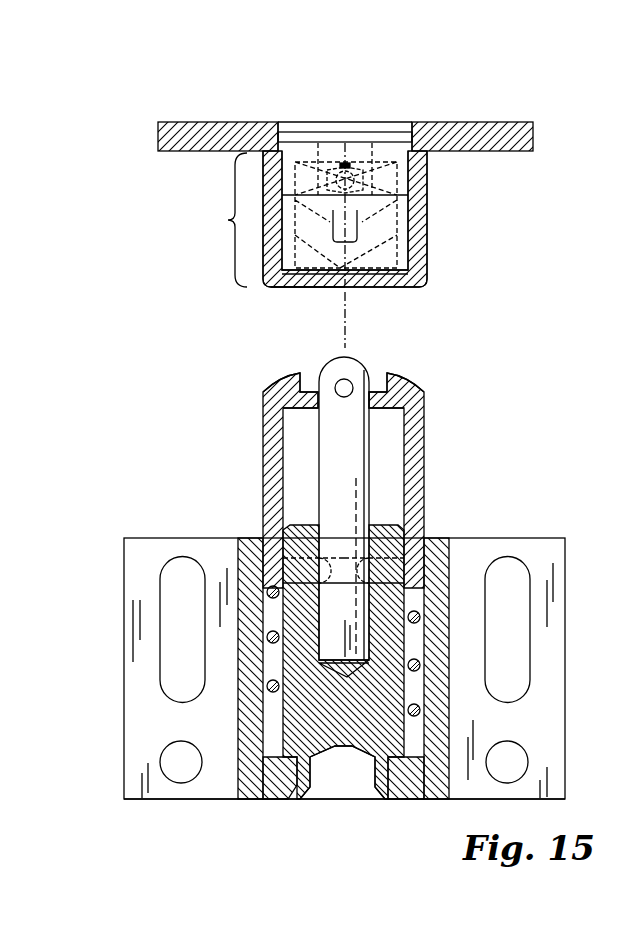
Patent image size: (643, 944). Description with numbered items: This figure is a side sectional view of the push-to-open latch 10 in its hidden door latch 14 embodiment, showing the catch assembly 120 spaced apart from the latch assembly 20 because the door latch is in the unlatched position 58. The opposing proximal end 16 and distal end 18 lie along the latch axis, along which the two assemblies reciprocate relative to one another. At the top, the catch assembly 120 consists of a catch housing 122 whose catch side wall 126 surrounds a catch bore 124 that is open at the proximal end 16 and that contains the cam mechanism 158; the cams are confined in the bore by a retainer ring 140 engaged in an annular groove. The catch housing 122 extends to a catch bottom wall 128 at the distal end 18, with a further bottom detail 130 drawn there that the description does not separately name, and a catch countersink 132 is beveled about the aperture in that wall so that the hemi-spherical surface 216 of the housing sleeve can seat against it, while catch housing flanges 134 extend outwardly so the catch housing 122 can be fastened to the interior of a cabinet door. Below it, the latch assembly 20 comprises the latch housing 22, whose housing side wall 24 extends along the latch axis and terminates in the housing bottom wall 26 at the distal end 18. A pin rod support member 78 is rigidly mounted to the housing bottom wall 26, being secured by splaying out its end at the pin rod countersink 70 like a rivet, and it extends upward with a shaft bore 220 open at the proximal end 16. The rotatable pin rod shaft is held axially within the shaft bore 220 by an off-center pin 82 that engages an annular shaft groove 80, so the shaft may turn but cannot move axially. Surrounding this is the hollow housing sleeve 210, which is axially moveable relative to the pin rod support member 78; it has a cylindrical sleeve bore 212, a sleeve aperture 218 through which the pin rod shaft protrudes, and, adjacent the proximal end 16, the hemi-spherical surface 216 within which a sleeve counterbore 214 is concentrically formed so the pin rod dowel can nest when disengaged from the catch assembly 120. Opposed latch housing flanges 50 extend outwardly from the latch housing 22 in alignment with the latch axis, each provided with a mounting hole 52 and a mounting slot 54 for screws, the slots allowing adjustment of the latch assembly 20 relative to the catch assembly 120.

The push-to-open latch 10 is at (200, 92).
The hidden door latch 14 is at (248, 173).
The proximal end 16 is at (443, 123).
The catch housing flange 134 is at (240, 128).
The retainer ring 140 is at (296, 132).
The catch bore 124 is at (402, 125).
The catch assembly 120 is at (533, 135).
The unlatched position 58 is at (523, 139).
The catch side wall 126 is at (423, 166).
The catch housing 122 is at (425, 214).
The cam mechanism 158 is at (211, 220).
The catch bottom wall 128 is at (275, 288).
The cup bottom wall 130 is at (295, 288).
The catch countersink 132 is at (368, 287).
The sleeve counterbore 214 is at (302, 381).
The sleeve aperture 218 is at (318, 414).
The housing sleeve 210 is at (263, 437).
The hemi-spherical surface 216 is at (408, 380).
The sleeve bore 212 is at (404, 408).
The shaft bore 220 is at (363, 522).
The pin rod support member 78 is at (290, 514).
The annular shaft groove 80 is at (300, 588).
The off-center pin 82 is at (408, 565).
The mounting slot 54 is at (170, 630).
The latch assembly 20 is at (565, 665).
The latch housing 22 is at (235, 712).
The housing side wall 24 is at (447, 715).
The mounting hole 52 is at (165, 762).
The latch housing flange 50 is at (205, 792).
The housing bottom wall 26 is at (262, 787).
The pin rod countersink 70 is at (352, 750).
The distal end 18 is at (412, 800).